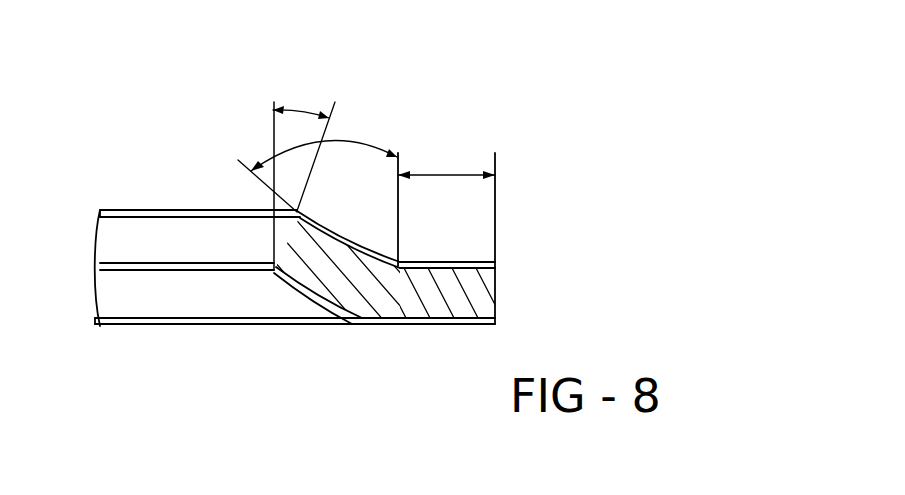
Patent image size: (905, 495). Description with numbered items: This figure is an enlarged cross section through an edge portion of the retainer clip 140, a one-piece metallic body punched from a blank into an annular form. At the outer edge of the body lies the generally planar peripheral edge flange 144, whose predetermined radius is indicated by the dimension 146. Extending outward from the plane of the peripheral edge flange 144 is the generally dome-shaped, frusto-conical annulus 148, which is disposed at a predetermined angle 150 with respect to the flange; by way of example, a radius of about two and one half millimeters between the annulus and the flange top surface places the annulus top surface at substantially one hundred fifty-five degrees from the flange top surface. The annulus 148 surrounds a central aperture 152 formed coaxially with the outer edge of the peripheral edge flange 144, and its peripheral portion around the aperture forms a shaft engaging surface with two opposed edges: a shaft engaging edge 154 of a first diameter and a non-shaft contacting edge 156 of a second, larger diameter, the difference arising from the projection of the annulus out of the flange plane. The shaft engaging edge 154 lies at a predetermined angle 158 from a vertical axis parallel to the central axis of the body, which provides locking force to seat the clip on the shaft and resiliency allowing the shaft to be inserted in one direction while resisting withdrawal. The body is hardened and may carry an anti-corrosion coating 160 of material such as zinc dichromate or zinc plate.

The retainer clip 140 is at (126, 196).
The peripheral edge flange 144 is at (481, 295).
The radius of the peripheral edge flange 146 is at (460, 173).
The frusto-conical annulus 148 is at (347, 247).
The angle of the frusto-conical annulus 150 is at (342, 143).
The aperture 152 is at (277, 243).
The shaft engaging edge 154 is at (269, 266).
The non-shaft contacting edge 156 is at (278, 209).
The angle of the shaft engaging surface 158 is at (291, 108).
The anti-corrosion coating 160 is at (460, 262).